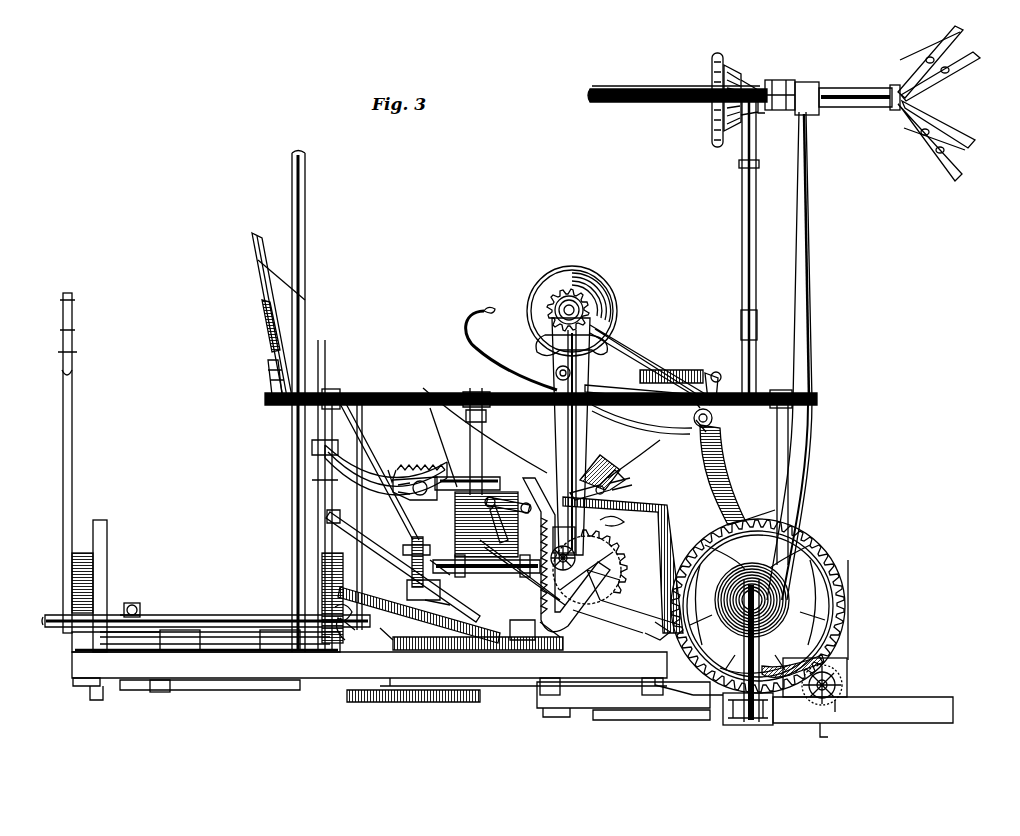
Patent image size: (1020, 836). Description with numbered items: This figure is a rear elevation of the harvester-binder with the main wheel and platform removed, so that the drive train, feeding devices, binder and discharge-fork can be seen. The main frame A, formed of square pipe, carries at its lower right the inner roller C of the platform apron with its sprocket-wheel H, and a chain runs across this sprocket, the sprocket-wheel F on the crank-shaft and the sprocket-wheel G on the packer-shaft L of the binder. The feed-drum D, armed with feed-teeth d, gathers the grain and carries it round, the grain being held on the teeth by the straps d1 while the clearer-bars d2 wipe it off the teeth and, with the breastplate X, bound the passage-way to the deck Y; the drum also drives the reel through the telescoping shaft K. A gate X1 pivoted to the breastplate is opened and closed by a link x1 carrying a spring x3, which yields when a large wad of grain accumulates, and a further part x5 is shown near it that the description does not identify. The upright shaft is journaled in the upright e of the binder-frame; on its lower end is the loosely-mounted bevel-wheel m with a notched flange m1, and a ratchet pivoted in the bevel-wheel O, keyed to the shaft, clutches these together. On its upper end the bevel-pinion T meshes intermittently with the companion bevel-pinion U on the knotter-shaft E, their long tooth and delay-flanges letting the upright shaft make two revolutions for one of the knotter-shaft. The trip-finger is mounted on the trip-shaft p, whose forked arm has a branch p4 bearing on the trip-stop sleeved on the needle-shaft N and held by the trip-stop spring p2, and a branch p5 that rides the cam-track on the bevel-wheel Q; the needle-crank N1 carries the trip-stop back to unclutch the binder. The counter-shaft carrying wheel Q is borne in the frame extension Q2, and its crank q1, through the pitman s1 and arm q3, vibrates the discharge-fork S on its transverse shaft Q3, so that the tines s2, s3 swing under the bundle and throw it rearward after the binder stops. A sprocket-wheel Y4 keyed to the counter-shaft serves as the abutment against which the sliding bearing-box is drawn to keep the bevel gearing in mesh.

The telescoping shaft K is at (751, 285).
The clearer-bars d2 is at (806, 452).
The feed-drum D is at (772, 598).
The feed-teeth d is at (826, 628).
The inner roller C is at (840, 688).
The sprocket-wheel H is at (843, 700).
The main frame A is at (252, 660).
The sprocket-wheel Y4 is at (134, 607).
The bevel-pinion U is at (590, 292).
The knotter-shaft E is at (580, 312).
The bevel-pinion T is at (537, 346).
The upright of the binder-frame e is at (558, 444).
The spring x3 is at (652, 365).
The link x1 is at (708, 376).
The breastplate X is at (673, 426).
The gate X1 is at (716, 428).
The sector x5 is at (740, 470).
The transverse shaft Q3 is at (490, 478).
The needle-shaft N is at (530, 480).
The fork of the trip-shaft arm p4 is at (522, 483).
The trip-shaft p is at (470, 528).
The extension of the binder-frame Q2 is at (470, 560).
The bevel-wheel Q is at (548, 615).
The needle-crank N1 is at (522, 615).
The sprocket-wheel G is at (612, 552).
The packer-shaft L is at (590, 570).
The bevel-wheel m is at (653, 500).
The upper flange m1 is at (605, 512).
The deck Y is at (626, 478).
The bevel-wheel O is at (603, 480).
The trip-stop spring p2 is at (607, 470).
The straps d1 is at (656, 620).
The front rib s2 is at (378, 492).
The discharge-fork S is at (420, 480).
The tine s3 is at (391, 470).
The arm q3 is at (430, 502).
The arm p5 is at (410, 565).
The pitman s1 is at (410, 582).
The crank q1 is at (430, 598).
The sprocket-wheel F is at (356, 628).